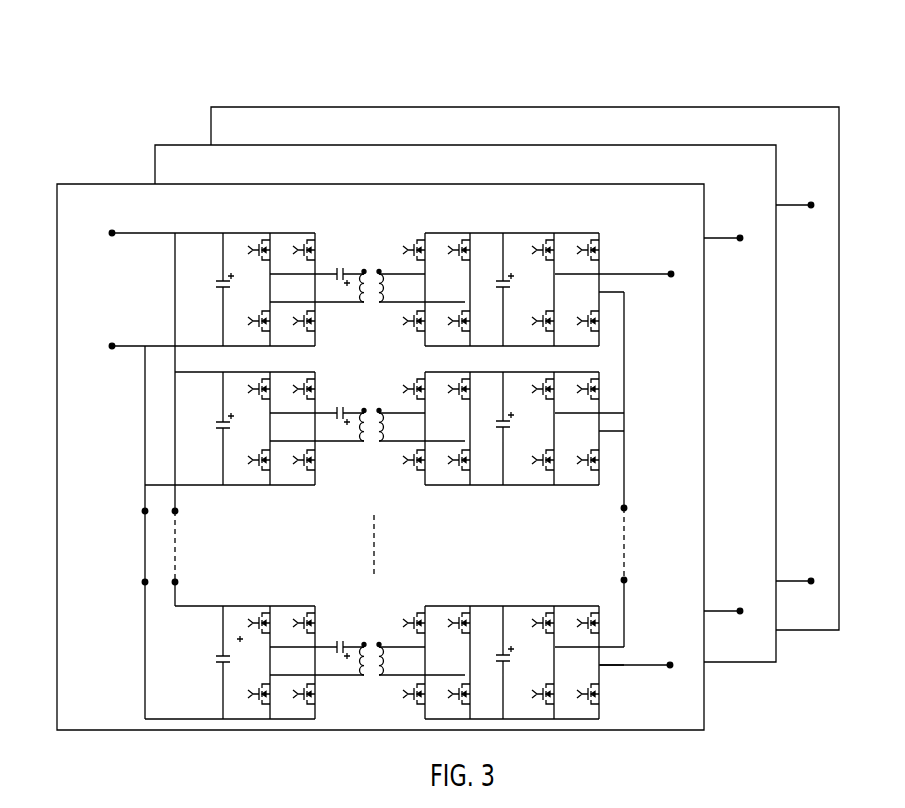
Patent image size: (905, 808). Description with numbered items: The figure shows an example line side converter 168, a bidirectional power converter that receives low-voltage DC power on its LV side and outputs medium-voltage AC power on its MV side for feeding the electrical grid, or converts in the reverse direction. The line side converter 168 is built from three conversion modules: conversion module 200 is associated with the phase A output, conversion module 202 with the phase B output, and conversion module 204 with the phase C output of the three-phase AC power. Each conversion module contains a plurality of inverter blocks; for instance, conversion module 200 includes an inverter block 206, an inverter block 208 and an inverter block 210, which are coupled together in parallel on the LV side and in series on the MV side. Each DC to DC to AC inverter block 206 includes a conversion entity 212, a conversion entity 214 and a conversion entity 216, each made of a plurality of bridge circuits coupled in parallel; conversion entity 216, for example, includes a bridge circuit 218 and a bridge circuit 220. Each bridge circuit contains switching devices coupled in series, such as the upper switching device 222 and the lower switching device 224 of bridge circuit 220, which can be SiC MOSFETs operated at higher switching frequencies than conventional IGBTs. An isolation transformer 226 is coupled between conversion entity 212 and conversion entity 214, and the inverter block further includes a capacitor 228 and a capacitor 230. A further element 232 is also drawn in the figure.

The line side converter 168 is at (661, 73).
The conversion module 200 is at (53, 212).
The conversion module 202 is at (181, 144).
The conversion module 204 is at (232, 106).
The inverter block 206 is at (190, 232).
The inverter block 208 is at (205, 485).
The inverter block 210 is at (205, 605).
The conversion entity 212 is at (318, 226).
The conversion entity 214 is at (472, 226).
The conversion entity 216 is at (600, 226).
The bridge circuit 218 is at (533, 277).
The bridge circuit 220 is at (600, 268).
The upper switching device 222 is at (600, 242).
The lower switching device 224 is at (598, 314).
The isolation transformer 226 is at (360, 303).
The capacitor 228 is at (221, 289).
The capacitor 230 is at (505, 289).
The resonant capacitor 232 is at (335, 272).